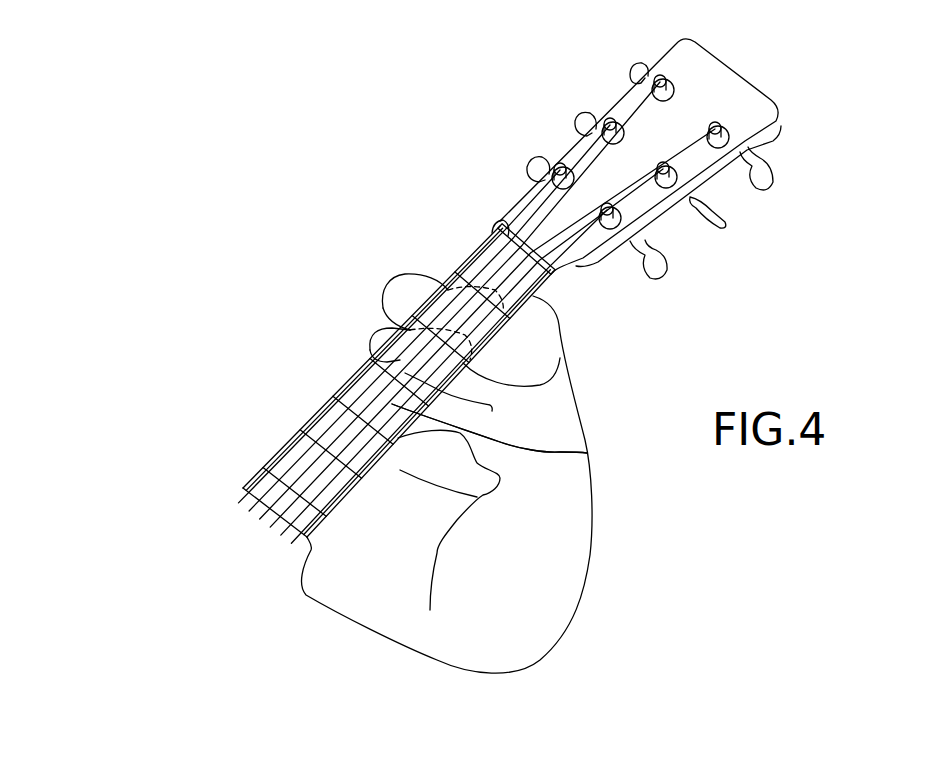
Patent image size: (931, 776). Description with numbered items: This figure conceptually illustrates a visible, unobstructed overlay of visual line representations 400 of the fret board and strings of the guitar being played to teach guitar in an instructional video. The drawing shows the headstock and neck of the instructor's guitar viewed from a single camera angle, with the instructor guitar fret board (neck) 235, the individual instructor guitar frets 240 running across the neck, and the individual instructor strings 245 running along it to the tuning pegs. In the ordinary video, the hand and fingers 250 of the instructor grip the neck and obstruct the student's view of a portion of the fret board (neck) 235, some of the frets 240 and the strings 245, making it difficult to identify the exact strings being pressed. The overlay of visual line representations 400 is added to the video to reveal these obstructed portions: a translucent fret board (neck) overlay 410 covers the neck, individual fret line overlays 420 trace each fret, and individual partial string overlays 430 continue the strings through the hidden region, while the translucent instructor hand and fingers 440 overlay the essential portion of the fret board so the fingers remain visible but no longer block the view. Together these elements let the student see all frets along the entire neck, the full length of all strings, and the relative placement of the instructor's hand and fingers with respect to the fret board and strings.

The visible, unobstructed overlay of visual line representations 400 is at (166, 117).
The instructor guitar fret board (neck) 235 is at (283, 500).
The instructor guitar frets 240 is at (320, 416).
The instructor strings 245 is at (293, 458).
The translucent instructor hand and fingers 440 is at (488, 230).
The translucent fret board (neck) overlay 410 is at (412, 334).
The fret line overlays 420 is at (440, 287).
The partial string overlays 430 is at (453, 280).
The hand and fingers 250 is at (542, 418).